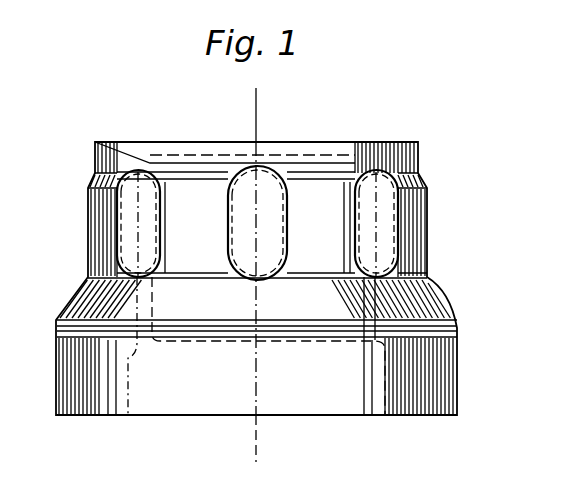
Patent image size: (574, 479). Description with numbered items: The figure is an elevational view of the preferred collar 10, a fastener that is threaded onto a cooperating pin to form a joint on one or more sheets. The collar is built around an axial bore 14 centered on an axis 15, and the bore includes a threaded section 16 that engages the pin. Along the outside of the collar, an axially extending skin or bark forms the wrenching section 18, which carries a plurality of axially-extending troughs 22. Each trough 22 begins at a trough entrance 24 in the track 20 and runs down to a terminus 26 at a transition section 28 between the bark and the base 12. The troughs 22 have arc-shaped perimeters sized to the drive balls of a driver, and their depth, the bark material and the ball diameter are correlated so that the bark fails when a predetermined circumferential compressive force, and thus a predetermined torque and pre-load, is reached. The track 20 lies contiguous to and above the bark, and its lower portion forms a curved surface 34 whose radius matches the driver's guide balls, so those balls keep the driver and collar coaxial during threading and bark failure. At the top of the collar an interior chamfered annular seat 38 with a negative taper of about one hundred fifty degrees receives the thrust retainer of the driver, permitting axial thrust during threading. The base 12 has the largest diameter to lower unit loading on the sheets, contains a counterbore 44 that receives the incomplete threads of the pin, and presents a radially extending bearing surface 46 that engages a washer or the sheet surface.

The collar 10 is at (460, 208).
The base 12 is at (460, 371).
The axial bore 14 is at (269, 428).
The axis 15 is at (256, 95).
The threaded section 16 is at (375, 160).
The wrenching section 18 is at (88, 223).
The track 20 is at (422, 166).
The axially-extending troughs 22 is at (137, 172).
The trough entrances 24 is at (263, 168).
The terminii 26 is at (256, 281).
The transition section 28 is at (440, 306).
The curved surface 34 is at (428, 185).
The annular seat 38 is at (372, 166).
The counterbore 44 is at (384, 388).
The bearing surface 46 is at (98, 415).